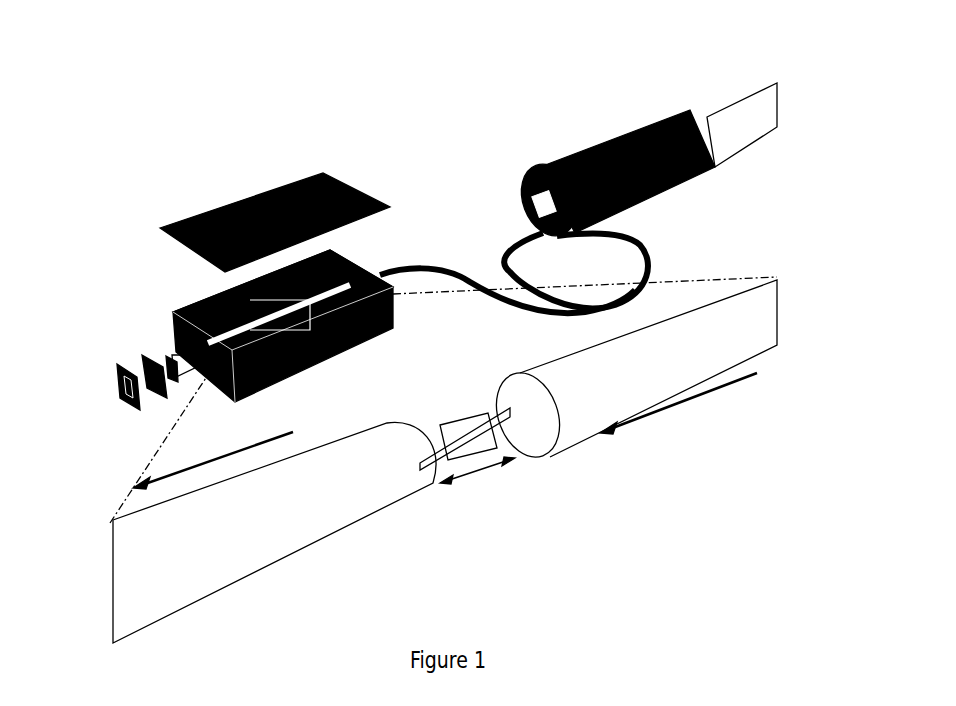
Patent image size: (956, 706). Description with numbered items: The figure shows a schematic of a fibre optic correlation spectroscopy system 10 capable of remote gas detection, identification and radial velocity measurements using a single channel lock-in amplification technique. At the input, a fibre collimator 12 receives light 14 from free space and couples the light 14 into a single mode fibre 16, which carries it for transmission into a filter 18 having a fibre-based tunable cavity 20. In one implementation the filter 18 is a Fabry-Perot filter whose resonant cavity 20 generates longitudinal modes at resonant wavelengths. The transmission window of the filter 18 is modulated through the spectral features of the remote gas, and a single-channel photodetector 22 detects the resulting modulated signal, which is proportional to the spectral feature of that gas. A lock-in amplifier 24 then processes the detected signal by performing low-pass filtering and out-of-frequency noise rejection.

The fibre optic correlation spectroscopy system 10 is at (505, 598).
The fibre collimator 12 is at (623, 133).
The light 14 is at (753, 121).
The single mode fibre 16 is at (510, 250).
The filter 18 is at (210, 297).
The fibre-based tunable cavity 20 is at (472, 417).
The single-channel photodetector 22 is at (168, 354).
The lock-in amplifier 24 is at (118, 366).